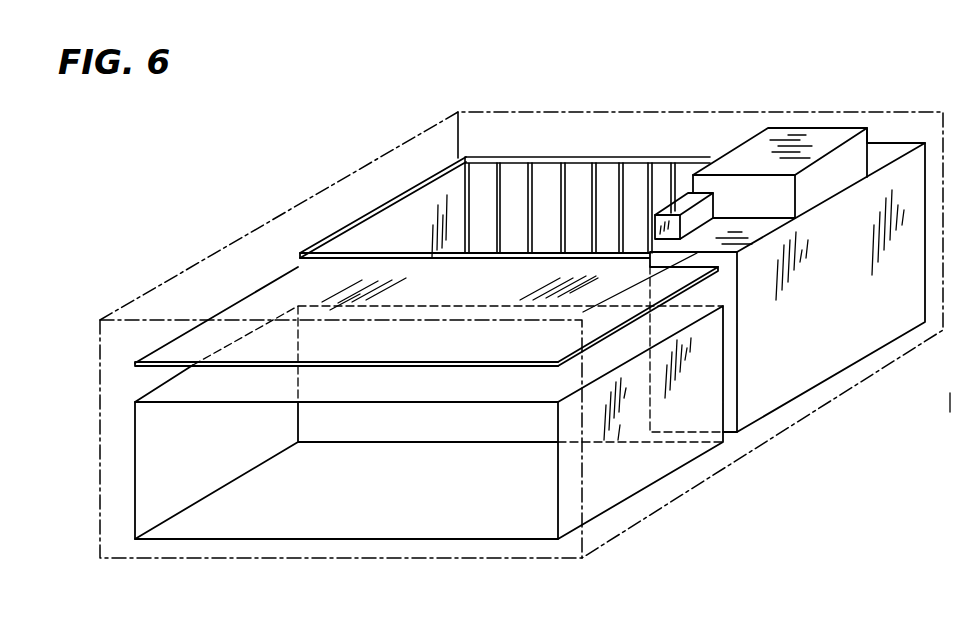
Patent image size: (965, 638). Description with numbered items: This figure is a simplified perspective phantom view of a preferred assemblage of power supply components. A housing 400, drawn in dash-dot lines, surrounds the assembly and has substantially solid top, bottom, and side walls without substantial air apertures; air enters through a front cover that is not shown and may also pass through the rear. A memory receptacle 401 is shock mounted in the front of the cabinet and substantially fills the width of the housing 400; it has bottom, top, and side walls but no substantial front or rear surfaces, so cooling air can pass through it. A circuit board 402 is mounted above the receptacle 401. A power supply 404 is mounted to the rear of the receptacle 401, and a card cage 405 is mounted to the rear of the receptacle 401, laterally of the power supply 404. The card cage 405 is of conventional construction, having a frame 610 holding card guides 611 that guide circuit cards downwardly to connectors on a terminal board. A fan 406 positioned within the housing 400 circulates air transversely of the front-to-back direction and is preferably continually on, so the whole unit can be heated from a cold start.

The housing 400 is at (628, 522).
The memory receptacle 401 is at (407, 530).
The circuit board 402 is at (252, 302).
The power supply 404 is at (822, 377).
The card cage 405 is at (400, 197).
The fan 406 is at (684, 202).
The frame 610 is at (587, 161).
The card guides 611 is at (500, 178).